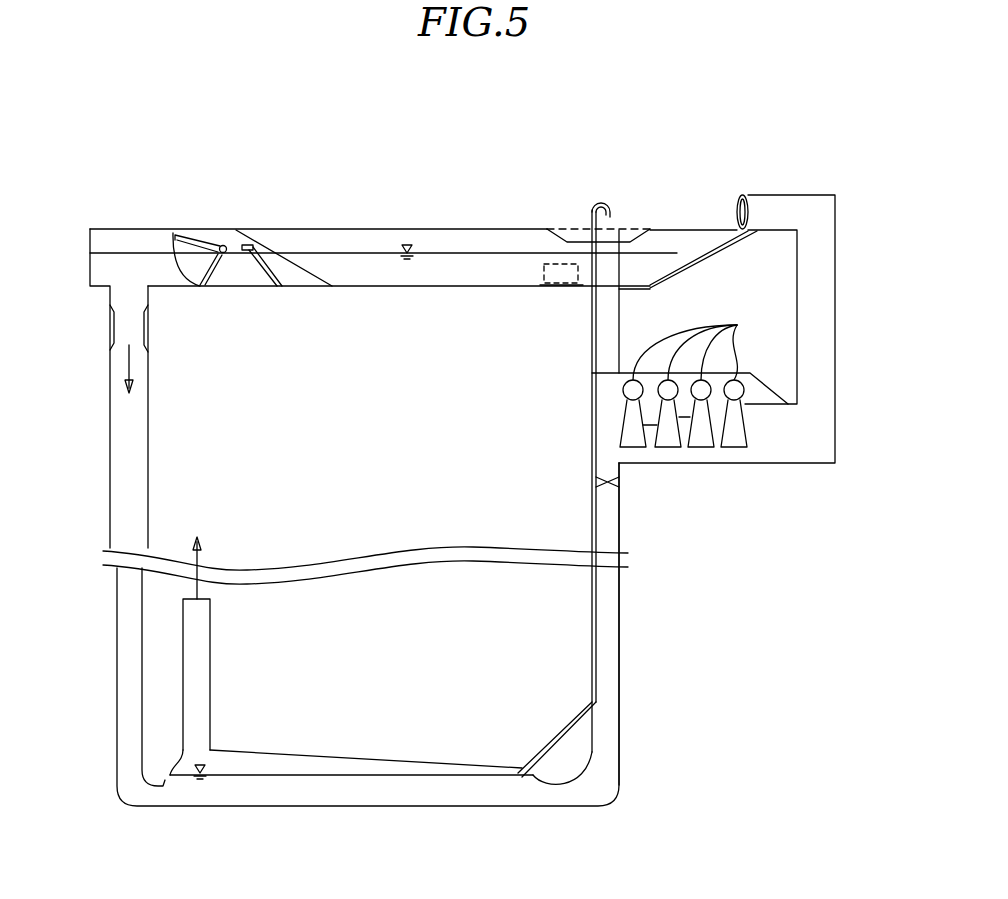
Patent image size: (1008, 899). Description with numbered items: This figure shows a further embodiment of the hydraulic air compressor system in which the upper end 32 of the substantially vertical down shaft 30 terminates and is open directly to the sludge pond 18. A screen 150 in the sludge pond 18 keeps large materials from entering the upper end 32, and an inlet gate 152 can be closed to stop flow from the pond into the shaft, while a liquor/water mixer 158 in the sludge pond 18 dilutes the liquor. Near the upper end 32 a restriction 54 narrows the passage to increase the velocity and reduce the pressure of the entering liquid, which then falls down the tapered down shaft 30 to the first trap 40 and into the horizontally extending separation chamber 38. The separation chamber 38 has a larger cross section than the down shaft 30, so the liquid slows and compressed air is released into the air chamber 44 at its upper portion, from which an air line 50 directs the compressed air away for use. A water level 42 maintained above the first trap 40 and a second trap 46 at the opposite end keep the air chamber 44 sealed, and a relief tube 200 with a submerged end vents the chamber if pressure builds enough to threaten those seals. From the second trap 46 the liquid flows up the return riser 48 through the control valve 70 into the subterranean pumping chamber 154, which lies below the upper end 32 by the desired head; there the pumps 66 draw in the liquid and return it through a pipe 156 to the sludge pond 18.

The sludge pond 18 is at (483, 235).
The down shaft 30 is at (148, 407).
The upper end 32 is at (127, 294).
The separation chamber 38 is at (380, 758).
The first trap 40 is at (140, 797).
The water level 42 is at (233, 773).
The air chamber 44 is at (282, 762).
The second trap 46 is at (597, 790).
The return riser 48 is at (620, 622).
The air line 50 is at (202, 623).
The restriction 54 is at (148, 327).
The pumps 66 is at (701, 377).
The control valve 70 is at (620, 482).
The screen 150 is at (280, 258).
The inlet gate 152 is at (173, 240).
The pumping chamber 154 is at (763, 452).
The pipe 156 is at (822, 327).
The liquor/water mixer 158 is at (563, 265).
The relief tube 200 is at (592, 352).